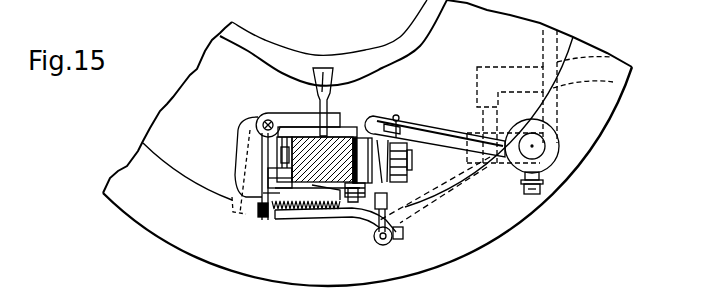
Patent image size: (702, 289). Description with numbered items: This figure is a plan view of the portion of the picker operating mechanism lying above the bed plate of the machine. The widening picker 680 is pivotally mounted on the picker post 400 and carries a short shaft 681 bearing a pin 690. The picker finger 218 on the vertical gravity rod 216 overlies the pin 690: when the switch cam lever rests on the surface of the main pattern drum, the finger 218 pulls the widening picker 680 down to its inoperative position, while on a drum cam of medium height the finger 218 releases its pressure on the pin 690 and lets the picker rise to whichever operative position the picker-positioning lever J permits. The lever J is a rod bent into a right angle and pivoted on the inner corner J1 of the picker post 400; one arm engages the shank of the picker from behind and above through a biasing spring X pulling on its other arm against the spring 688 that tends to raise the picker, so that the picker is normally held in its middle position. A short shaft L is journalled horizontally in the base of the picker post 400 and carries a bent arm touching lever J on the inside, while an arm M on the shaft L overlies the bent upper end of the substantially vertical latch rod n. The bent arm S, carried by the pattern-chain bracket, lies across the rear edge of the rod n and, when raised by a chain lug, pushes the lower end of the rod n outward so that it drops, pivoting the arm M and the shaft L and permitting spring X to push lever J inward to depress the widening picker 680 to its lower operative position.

The widening picker 680 is at (321, 74).
The picker post 400 is at (343, 137).
The pin 690 is at (398, 114).
The picker finger 218 is at (443, 113).
The short shaft 681 is at (396, 163).
The spring 688 is at (392, 179).
The vertical gravity rod 216 is at (534, 147).
The bent arm S is at (490, 78).
The inner corner of the down pick post J1 is at (265, 122).
The picker-positioning lever J is at (247, 217).
The short shaft L is at (287, 222).
The biasing spring X is at (318, 211).
The arm M is at (372, 212).
The latch bar or rod n is at (368, 224).